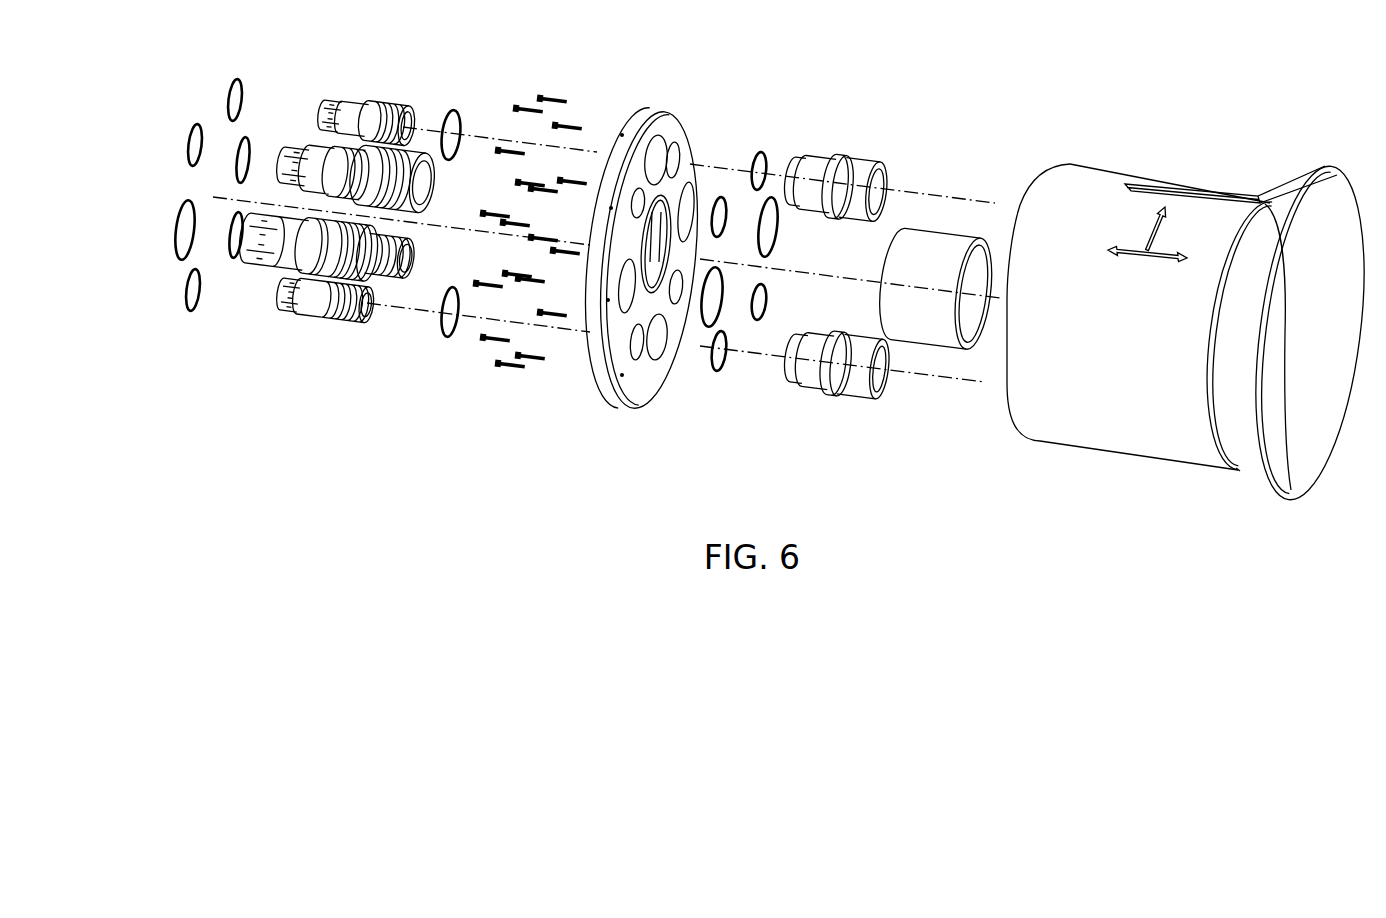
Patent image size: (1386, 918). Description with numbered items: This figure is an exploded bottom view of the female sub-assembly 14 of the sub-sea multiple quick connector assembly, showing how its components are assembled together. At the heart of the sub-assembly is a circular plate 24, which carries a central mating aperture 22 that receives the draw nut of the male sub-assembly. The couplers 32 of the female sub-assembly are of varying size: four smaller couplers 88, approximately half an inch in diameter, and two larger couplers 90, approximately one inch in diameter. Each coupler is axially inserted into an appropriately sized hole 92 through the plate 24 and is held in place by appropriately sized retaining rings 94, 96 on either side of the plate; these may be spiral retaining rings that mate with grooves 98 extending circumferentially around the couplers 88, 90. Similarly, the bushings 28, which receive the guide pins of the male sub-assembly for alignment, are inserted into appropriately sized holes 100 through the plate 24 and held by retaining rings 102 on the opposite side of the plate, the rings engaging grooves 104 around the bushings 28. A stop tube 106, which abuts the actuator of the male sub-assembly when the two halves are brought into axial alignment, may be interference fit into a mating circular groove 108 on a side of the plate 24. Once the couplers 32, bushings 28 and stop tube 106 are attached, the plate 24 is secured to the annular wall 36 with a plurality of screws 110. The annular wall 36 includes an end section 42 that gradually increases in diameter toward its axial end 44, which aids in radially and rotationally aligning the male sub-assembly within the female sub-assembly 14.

The female sub-assembly 14 is at (1250, 103).
The mating aperture 22 is at (636, 200).
The circular plate 24 is at (628, 260).
The bushings 28 is at (857, 165).
The couplers 32 is at (285, 374).
The annular wall 36 is at (1130, 182).
The end section 42 is at (1250, 462).
The axial end 44 is at (1300, 506).
The smaller couplers 88 is at (312, 150).
The larger couplers 90 is at (418, 170).
The holes 92 is at (679, 158).
The retaining rings 94 is at (193, 128).
The retaining rings 96 is at (195, 208).
The grooves 98 is at (384, 98).
The holes 100 is at (657, 140).
The retaining rings 102 is at (461, 128).
The grooves 104 is at (810, 156).
The stop tube 106 is at (935, 348).
The circular groove 108 is at (645, 250).
The screws 110 is at (513, 370).